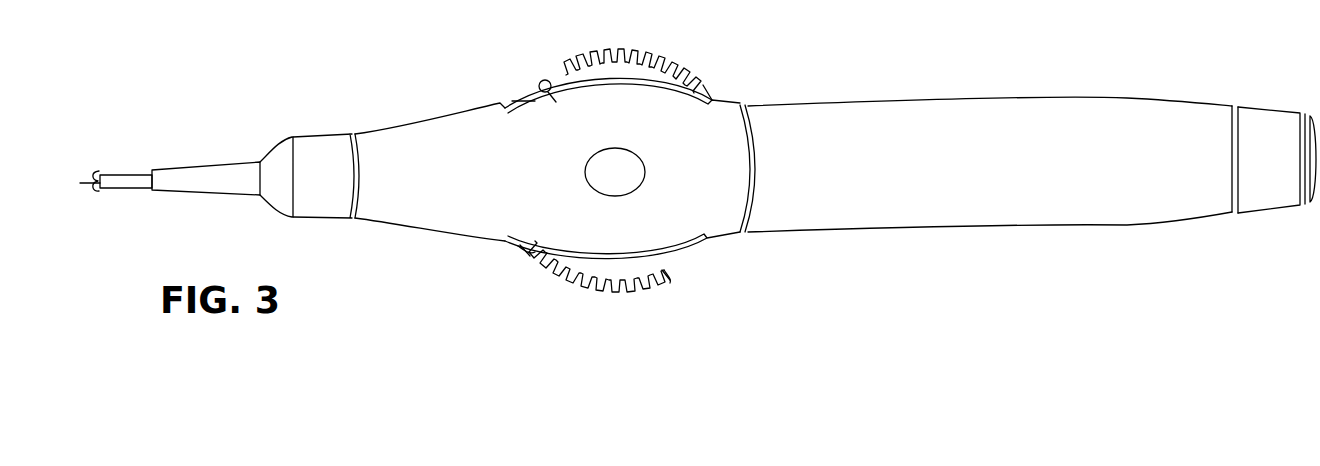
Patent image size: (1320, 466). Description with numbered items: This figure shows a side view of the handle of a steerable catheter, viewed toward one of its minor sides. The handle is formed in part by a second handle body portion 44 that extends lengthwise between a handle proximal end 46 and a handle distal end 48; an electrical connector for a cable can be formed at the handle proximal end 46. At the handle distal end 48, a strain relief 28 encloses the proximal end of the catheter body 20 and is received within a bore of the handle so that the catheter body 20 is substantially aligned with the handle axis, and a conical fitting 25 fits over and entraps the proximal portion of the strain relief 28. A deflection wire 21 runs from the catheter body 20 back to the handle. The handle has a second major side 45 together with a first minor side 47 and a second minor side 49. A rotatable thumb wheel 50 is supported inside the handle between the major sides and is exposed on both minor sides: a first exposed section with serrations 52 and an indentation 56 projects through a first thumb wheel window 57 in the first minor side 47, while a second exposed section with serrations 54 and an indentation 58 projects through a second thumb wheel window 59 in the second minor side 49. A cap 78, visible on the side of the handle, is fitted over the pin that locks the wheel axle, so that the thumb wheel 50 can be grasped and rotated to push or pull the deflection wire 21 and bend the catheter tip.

The catheter body 20 is at (130, 175).
The deflection wire 21 is at (88, 192).
The strain relief 28 is at (198, 185).
The handle distal end 48 is at (262, 153).
The conical fitting 25 is at (318, 158).
The thumb wheel 50 is at (570, 163).
The first thumb wheel window 57 is at (703, 85).
The cap 78 is at (603, 169).
The serrations 52 is at (612, 50).
The indentation 56 is at (530, 85).
The indentation 58 is at (567, 290).
The second thumb wheel window 59 is at (530, 252).
The serrations 54 is at (700, 255).
The second handle body portion 44 is at (1032, 153).
The second major side 45 is at (915, 203).
The first minor side 47 is at (1112, 97).
The second minor side 49 is at (1093, 225).
The handle proximal end 46 is at (1308, 108).